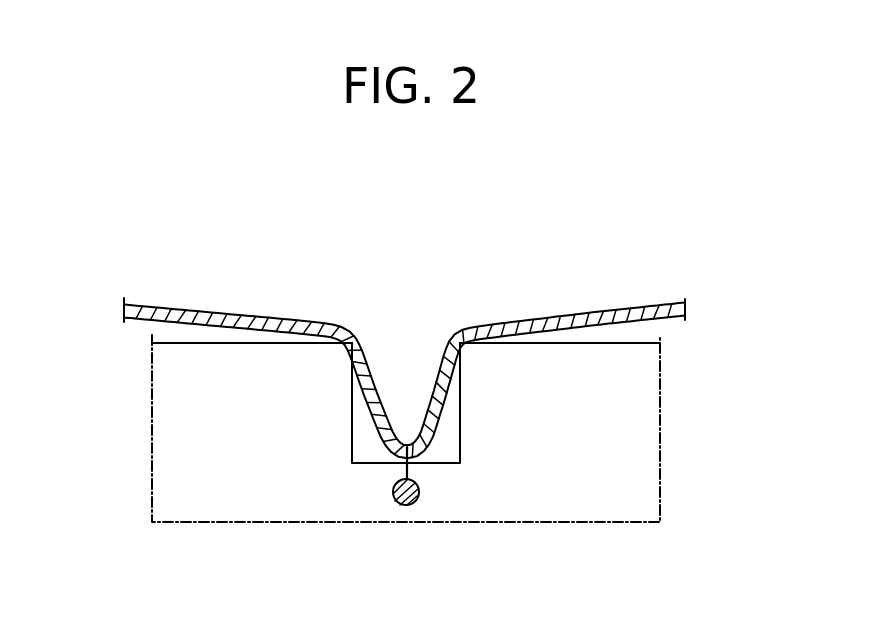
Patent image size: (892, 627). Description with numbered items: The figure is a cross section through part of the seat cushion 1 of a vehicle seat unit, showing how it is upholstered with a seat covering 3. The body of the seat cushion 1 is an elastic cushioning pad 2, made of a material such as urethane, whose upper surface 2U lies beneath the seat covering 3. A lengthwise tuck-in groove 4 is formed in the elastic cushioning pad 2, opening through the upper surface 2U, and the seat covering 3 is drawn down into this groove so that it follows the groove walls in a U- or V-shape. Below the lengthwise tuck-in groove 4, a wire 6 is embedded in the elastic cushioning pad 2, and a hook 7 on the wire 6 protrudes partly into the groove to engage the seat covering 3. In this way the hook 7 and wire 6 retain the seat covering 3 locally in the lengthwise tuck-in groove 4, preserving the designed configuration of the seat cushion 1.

The seat cushion 1 is at (481, 290).
The elastic cushioning pad 2 is at (175, 440).
The upper surface of the cushioning pad 2U is at (282, 343).
The seat covering 3 is at (195, 308).
The lengthwise tuck-in groove 4 is at (393, 398).
The wire 6 is at (417, 503).
The hook 7 is at (412, 468).